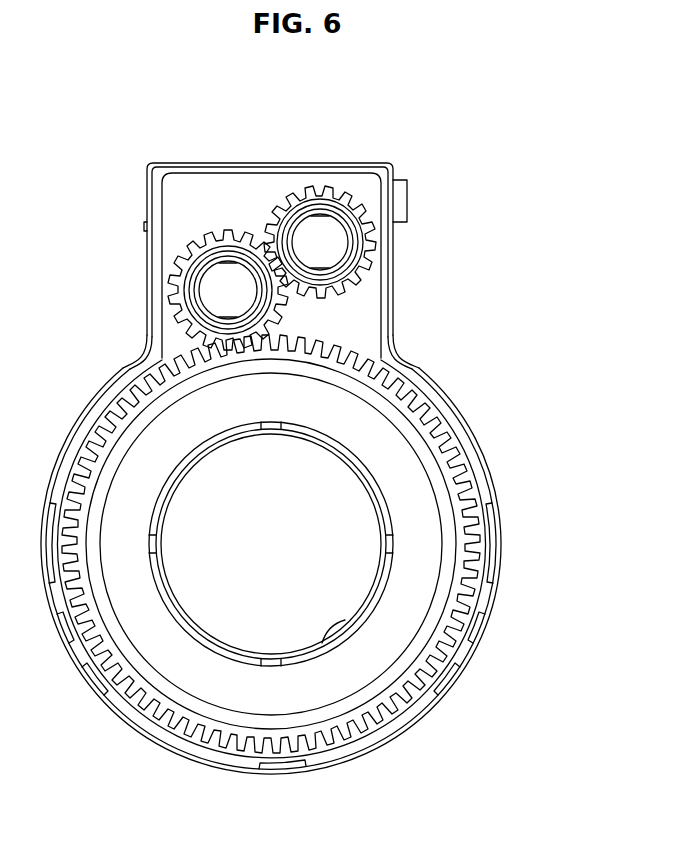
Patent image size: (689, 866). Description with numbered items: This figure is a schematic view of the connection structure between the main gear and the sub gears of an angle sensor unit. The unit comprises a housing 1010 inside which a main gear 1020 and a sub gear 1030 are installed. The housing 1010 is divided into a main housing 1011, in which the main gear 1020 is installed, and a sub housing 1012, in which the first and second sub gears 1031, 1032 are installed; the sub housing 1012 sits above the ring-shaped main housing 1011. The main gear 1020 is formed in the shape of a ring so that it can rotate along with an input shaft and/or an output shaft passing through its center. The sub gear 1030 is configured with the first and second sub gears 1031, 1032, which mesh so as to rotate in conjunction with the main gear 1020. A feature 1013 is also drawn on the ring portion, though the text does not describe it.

The housing 1010 is at (494, 245).
The main housing 1011 is at (448, 398).
The sub housing 1012 is at (386, 290).
The protrusion on inner hole 1013 is at (322, 643).
The main gear 1020 is at (470, 470).
The sub gear 1030 is at (347, 101).
The first sub gear 1031 is at (230, 236).
The second sub gear 1032 is at (322, 193).